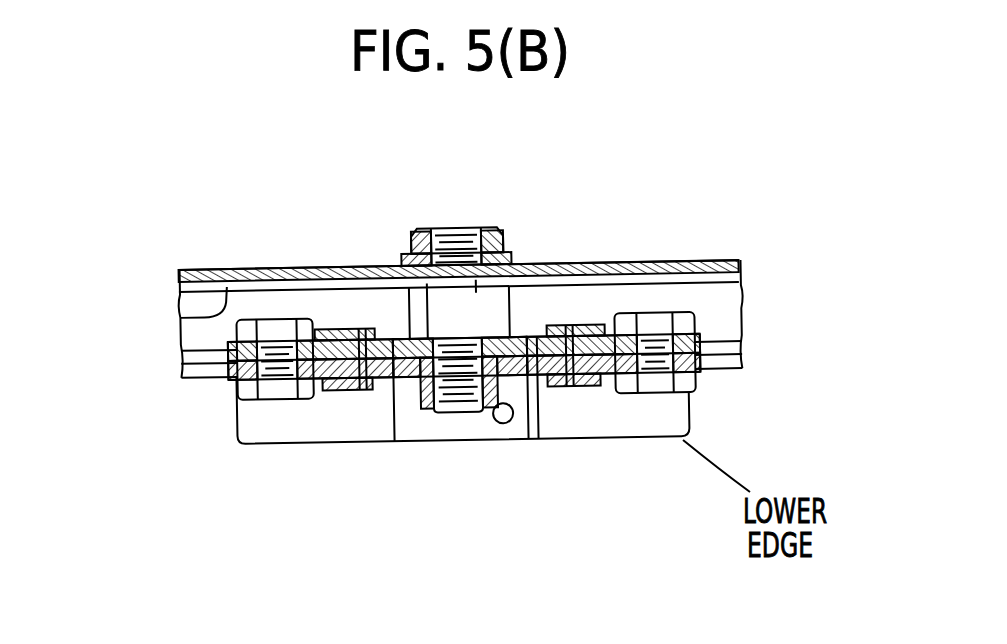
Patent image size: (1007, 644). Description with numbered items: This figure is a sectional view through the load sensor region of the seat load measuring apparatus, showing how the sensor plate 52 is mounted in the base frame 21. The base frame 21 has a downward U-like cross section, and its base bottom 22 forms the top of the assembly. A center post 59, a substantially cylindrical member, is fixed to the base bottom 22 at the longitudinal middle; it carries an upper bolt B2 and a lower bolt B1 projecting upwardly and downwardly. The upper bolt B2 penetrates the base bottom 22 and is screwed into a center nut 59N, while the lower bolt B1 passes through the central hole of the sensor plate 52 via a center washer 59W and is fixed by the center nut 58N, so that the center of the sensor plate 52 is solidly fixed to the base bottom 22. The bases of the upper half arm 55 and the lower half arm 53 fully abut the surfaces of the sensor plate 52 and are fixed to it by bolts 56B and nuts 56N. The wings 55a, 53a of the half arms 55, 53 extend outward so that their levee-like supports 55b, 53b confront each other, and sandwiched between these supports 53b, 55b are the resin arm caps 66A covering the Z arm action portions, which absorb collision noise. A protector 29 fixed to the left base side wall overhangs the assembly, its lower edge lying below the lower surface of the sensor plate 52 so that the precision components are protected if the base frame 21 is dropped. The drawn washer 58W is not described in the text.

The base frame 21 is at (202, 247).
The base bottom 22 is at (178, 320).
The protector 29 is at (239, 443).
The sensor plate 52 is at (540, 333).
The lower half arm 53 is at (333, 388).
The wings of lower half arm 53a is at (360, 388).
The supports of lower half arm 53b is at (370, 393).
The upper half arm 55 is at (288, 270).
The wings of upper half arm 55a is at (352, 333).
The supports of upper half arm 55b is at (357, 333).
The bolts 56B is at (230, 390).
The nuts 56N is at (230, 408).
The center nut 58N is at (414, 418).
The washer 58W is at (478, 425).
The center post 59 is at (477, 290).
The center nut 59N is at (493, 227).
The center washer 59W is at (443, 227).
The resin arm caps 66A is at (383, 333).
The lower bolt B1 is at (449, 420).
The upper bolt B2 is at (462, 227).